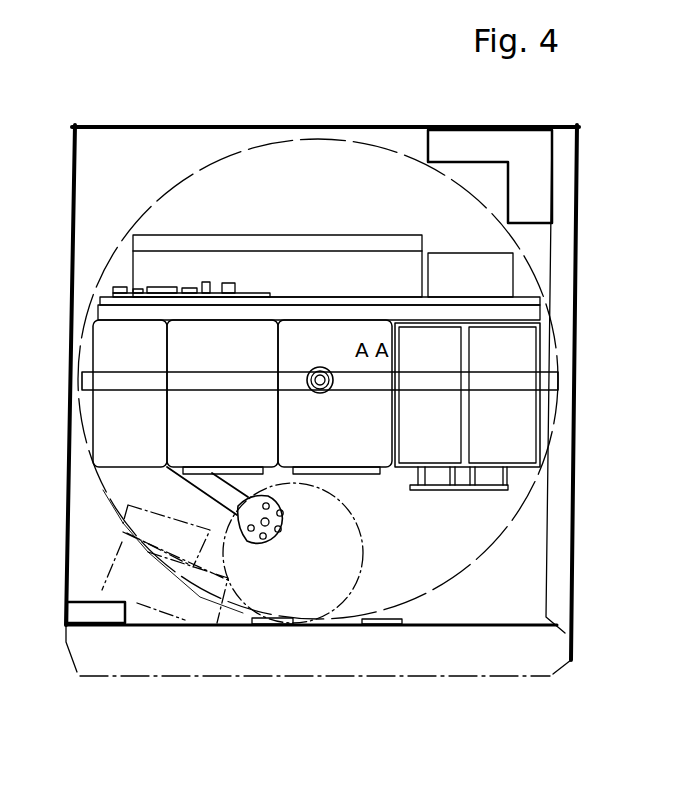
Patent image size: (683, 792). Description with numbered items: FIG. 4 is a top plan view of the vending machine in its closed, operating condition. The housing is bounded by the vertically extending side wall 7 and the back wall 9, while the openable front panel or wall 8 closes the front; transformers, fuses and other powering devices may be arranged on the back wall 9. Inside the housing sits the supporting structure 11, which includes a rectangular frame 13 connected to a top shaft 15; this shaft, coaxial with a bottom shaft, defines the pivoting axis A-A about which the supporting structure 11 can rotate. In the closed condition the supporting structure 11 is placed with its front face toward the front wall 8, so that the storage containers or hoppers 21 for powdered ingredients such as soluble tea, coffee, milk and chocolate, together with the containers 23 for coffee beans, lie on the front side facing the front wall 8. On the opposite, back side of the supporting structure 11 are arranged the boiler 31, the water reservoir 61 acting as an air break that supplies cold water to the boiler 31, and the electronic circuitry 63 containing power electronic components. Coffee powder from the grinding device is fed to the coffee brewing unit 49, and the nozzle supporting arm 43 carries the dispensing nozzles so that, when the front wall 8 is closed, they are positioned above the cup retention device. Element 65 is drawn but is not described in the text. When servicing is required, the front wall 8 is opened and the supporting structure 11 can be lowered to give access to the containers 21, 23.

The side wall 7 is at (70, 446).
The openable panel or wall 8 is at (463, 637).
The back wall 9 is at (228, 133).
The supporting structure 11 is at (587, 397).
The rectangular frame 13 is at (540, 377).
The top shaft 15 is at (316, 368).
The storage containers or hoppers 21 is at (147, 441).
The containers for coffee beans 23 is at (442, 441).
The boiler 31 is at (318, 270).
The nozzle supporting arm 43 is at (258, 540).
The coffee brewing unit 49 is at (478, 492).
The water reservoir 61 is at (463, 266).
The electronic circuitry 63 is at (190, 290).
The corner element 65 is at (537, 195).